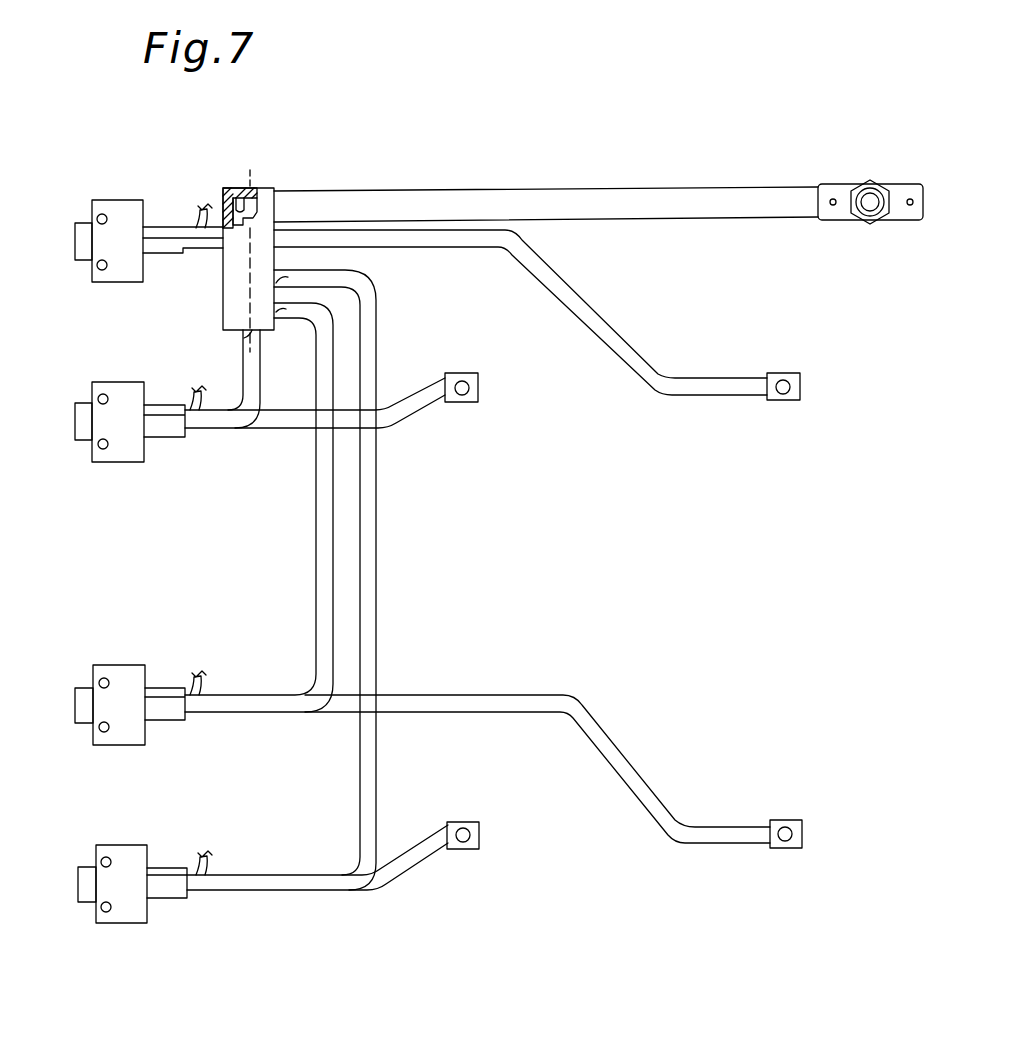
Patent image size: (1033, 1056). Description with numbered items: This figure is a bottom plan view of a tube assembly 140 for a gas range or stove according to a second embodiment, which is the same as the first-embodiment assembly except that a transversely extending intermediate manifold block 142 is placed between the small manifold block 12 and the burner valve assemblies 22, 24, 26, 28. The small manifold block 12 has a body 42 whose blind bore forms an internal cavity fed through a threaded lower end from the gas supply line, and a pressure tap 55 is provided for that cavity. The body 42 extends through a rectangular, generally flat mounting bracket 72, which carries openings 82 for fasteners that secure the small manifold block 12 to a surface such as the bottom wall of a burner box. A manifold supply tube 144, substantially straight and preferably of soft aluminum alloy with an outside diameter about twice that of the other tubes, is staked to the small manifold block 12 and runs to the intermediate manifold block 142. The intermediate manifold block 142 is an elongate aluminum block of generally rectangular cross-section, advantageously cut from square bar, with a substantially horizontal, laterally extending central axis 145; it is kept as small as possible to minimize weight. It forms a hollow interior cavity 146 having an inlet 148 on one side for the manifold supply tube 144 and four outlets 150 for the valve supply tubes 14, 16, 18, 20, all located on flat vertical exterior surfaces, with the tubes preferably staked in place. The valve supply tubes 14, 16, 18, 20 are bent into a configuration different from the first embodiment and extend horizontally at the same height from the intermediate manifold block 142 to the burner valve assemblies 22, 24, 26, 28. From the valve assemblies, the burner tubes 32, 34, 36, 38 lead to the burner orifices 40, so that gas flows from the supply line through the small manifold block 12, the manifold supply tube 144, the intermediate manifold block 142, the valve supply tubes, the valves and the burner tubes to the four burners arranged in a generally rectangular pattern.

The small manifold block 12 is at (828, 185).
The valve supply tube 14 is at (192, 255).
The valve supply tube 16 is at (265, 375).
The valve supply tube 18 is at (317, 577).
The valve supply tube 20 is at (360, 795).
The burner valve assembly 22 is at (103, 200).
The burner valve assembly 24 is at (100, 380).
The burner valve assembly 26 is at (105, 663).
The burner valve assembly 28 is at (108, 843).
The burner tube 32 is at (637, 370).
The burner tube 34 is at (410, 417).
The burner tube 36 is at (653, 813).
The burner tube 38 is at (405, 877).
The burner orifice 40 is at (478, 390).
The body 42 is at (862, 180).
The pressure tap 55 is at (885, 183).
The mounting bracket 72 is at (838, 221).
The opening 82 is at (910, 208).
The tube assembly 140 is at (688, 572).
The intermediate manifold block 142 is at (255, 186).
The manifold supply tube 144 is at (652, 222).
The central axis 145 is at (250, 168).
The interior cavity 146 is at (240, 205).
The inlet 148 is at (280, 207).
The outlet 150 is at (213, 240).